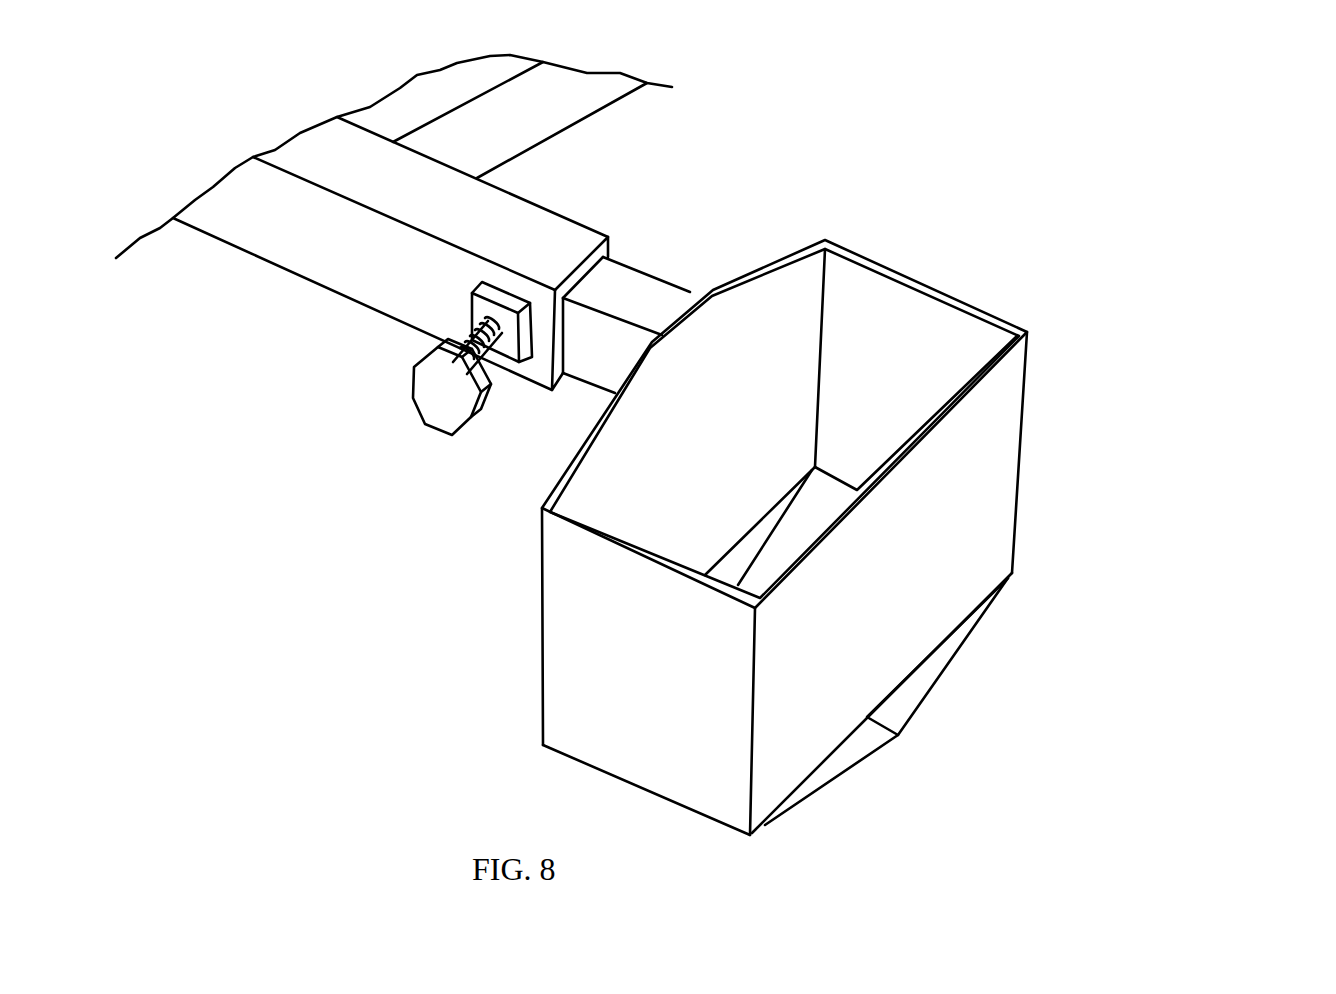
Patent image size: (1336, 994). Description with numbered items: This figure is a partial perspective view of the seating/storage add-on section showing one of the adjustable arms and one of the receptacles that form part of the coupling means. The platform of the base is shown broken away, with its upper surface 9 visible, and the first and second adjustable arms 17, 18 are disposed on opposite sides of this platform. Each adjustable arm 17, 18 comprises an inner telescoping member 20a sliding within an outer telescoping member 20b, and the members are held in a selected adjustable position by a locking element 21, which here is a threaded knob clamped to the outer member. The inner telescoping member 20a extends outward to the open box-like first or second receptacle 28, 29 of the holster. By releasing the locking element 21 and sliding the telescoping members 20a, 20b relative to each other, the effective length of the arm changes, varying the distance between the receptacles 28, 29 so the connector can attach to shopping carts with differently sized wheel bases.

The upper surface 9 is at (438, 106).
The first adjustable arm 17 is at (425, 247).
The second adjustable arm 18 is at (460, 247).
The inner telescoping member 20a is at (632, 283).
The outer telescoping member 20b is at (547, 220).
The locking element 21 is at (372, 358).
The first receptacle 28 is at (926, 537).
The second receptacle 29 is at (1020, 447).